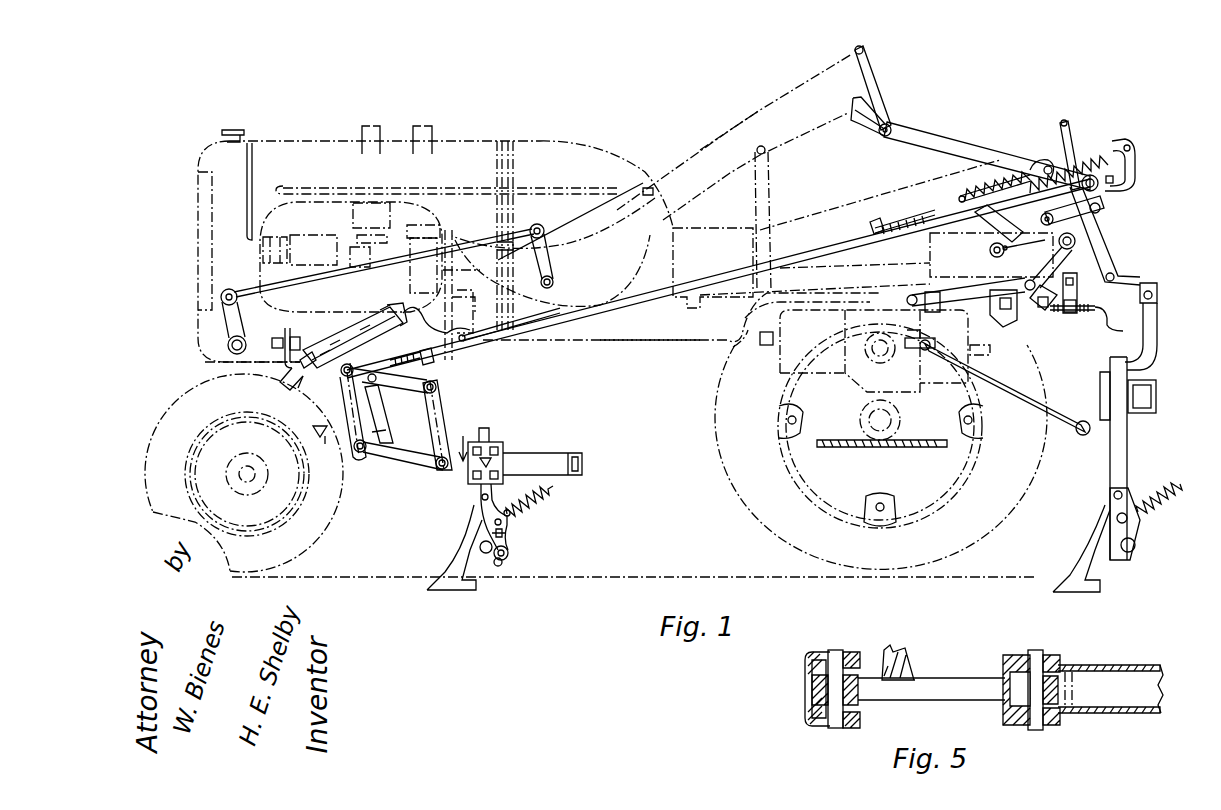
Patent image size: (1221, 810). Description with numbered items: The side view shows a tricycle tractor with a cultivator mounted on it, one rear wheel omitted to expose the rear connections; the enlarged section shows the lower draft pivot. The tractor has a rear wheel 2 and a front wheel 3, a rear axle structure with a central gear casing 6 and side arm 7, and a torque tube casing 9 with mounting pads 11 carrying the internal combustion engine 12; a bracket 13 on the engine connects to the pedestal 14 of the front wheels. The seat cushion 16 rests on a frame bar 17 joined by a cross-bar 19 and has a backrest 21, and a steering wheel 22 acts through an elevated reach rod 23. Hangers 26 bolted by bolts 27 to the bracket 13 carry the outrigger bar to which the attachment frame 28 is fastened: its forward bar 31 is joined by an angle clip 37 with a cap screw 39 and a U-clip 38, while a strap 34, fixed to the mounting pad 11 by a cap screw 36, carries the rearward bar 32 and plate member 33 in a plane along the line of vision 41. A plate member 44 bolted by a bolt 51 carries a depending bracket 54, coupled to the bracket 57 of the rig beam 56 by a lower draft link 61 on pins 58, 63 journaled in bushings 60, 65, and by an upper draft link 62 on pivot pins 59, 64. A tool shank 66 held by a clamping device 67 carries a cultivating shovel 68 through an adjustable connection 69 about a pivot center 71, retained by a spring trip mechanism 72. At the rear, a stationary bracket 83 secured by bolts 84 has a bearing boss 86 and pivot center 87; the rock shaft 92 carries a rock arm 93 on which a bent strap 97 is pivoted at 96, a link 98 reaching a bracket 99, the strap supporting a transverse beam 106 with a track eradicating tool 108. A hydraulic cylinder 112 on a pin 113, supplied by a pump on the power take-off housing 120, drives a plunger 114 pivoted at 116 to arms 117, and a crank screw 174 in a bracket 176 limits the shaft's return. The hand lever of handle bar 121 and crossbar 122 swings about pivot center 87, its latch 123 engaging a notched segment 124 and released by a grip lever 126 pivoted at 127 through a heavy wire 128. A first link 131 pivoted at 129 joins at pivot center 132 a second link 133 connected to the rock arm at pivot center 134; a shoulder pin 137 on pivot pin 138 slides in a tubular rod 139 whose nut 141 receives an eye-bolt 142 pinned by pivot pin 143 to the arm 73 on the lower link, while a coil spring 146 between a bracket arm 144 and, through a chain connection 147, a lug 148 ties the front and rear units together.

In FIG. 1, the rear wheel 2 is at (748, 524).
In FIG. 1, the front wheel 3 is at (183, 410).
In FIG. 1, the central gear casing 6 is at (775, 372).
In FIG. 1, the side arm 7 is at (827, 448).
In FIG. 1, the torque tube casing 9 is at (695, 342).
In FIG. 1, the mounting pad 11 is at (472, 300).
In FIG. 1, the internal combustion engine 12 is at (338, 228).
In FIG. 1, the bracket 13 is at (276, 336).
In FIG. 1, the pedestal 14 is at (215, 372).
In FIG. 1, the seat cushion 16 is at (930, 247).
In FIG. 1, the frame bar 17 is at (838, 310).
In FIG. 1, the cross-bar 19 is at (763, 255).
In FIG. 1, the backrest 21 is at (1067, 120).
In FIG. 1, the steering wheel 22 is at (878, 85).
In FIG. 1, the reach rod 23 is at (490, 245).
In FIG. 1, the hanger 26 is at (291, 332).
In FIG. 1, the bolt 27 is at (264, 345).
In FIG. 1, the attachment frame 28 is at (342, 328).
In FIG. 1, the forward bar 31 is at (318, 355).
In FIG. 1, the rearward bar 32 is at (395, 308).
In FIG. 1, the plate member 33 is at (372, 322).
In FIG. 1, the strap 34 is at (436, 320).
In FIG. 1, the cap screw 36 is at (470, 334).
In FIG. 1, the angle clip 37 is at (284, 384).
In FIG. 1, the U-clip 38 is at (312, 392).
In FIG. 1, the cap screw 39 is at (305, 352).
In FIG. 1, the line of vision 41 is at (815, 95).
In FIG. 1, the plate member 44 is at (330, 340).
In FIG. 1, the bolt 51 is at (388, 308).
In FIG. 1, the bracket 54 is at (344, 410).
In FIG. 5, the bracket 54 is at (808, 686).
In FIG. 1, the rig beam 56 is at (556, 456).
In FIG. 5, the rig beam 56 is at (1122, 666).
In FIG. 1, the bracket 57 is at (442, 422).
In FIG. 5, the bracket 57 is at (1008, 658).
In FIG. 1, the pin 58 is at (362, 454).
In FIG. 5, the pin 58 is at (833, 650).
In FIG. 1, the pivot pin 59 is at (341, 378).
In FIG. 5, the bushing 60 is at (860, 652).
In FIG. 1, the lower draft link 61 is at (404, 462).
In FIG. 5, the lower draft link 61 is at (948, 698).
In FIG. 1, the upper draft link 62 is at (389, 393).
In FIG. 1, the pin 63 is at (442, 472).
In FIG. 5, the pin 63 is at (1034, 650).
In FIG. 1, the pivot pin 64 is at (438, 390).
In FIG. 5, the bushing 65 is at (1060, 655).
In FIG. 1, the tool shank 66 is at (490, 430).
In FIG. 1, the clamping device 67 is at (503, 448).
In FIG. 1, the cultivating shovel 68 is at (458, 591).
In FIG. 1, the adjustable connection 69 is at (510, 555).
In FIG. 1, the pivot center 71 is at (480, 547).
In FIG. 1, the spring trip mechanism 72 is at (510, 522).
In FIG. 1, the arm 73 is at (390, 431).
In FIG. 5, the arm 73 is at (912, 662).
In FIG. 1, the stationary bracket 83 is at (1043, 310).
In FIG. 1, the bolt 84 is at (1060, 310).
In FIG. 1, the bearing boss 86 is at (1077, 240).
In FIG. 1, the pivot center 87 is at (1041, 155).
In FIG. 1, the rock shaft 92 is at (1075, 244).
In FIG. 1, the rock arm 93 is at (1160, 293).
In FIG. 1, the pivot 96 is at (1155, 334).
In FIG. 1, the bent strap 97 is at (1160, 340).
In FIG. 1, the link 98 is at (1023, 395).
In FIG. 1, the bracket 99 is at (930, 340).
In FIG. 1, the transverse beam 106 is at (1157, 396).
In FIG. 1, the track eradicating tool 108 is at (1070, 575).
In FIG. 1, the hydraulic cylinder 112 is at (960, 287).
In FIG. 1, the pin 113 is at (905, 298).
In FIG. 1, the plunger 114 is at (997, 322).
In FIG. 1, the pivotal connection 116 is at (1027, 280).
In FIG. 1, the arm 117 is at (1081, 292).
In FIG. 1, the power take-off housing 120 is at (940, 383).
In FIG. 1, the handle bar 121 is at (854, 112).
In FIG. 1, the crossbar 122 is at (1030, 158).
In FIG. 1, the latch 123 is at (992, 252).
In FIG. 1, the notched segment 124 is at (983, 233).
In FIG. 1, the grip lever 126 is at (878, 138).
In FIG. 1, the pivot 127 is at (893, 128).
In FIG. 1, the heavy wire 128 is at (933, 176).
In FIG. 1, the pivot center 129 is at (1031, 177).
In FIG. 1, the first link 131 is at (1102, 214).
In FIG. 1, the pivot center 132 is at (1102, 208).
In FIG. 1, the second link 133 is at (1120, 266).
In FIG. 1, the pivot center 134 is at (1088, 301).
In FIG. 1, the shoulder pin 137 is at (1069, 164).
In FIG. 1, the pivot pin 138 is at (1124, 145).
In FIG. 1, the tubular rod 139 is at (725, 272).
In FIG. 1, the nut 141 is at (430, 363).
In FIG. 1, the eye-bolt 142 is at (400, 352).
In FIG. 1, the pivot pin 143 is at (391, 389).
In FIG. 1, the bracket arm 144 is at (1136, 168).
In FIG. 1, the coil spring 146 is at (988, 182).
In FIG. 1, the chain connection 147 is at (912, 218).
In FIG. 1, the lug 148 is at (874, 224).
In FIG. 1, the crank screw 174 is at (1118, 332).
In FIG. 1, the bracket 176 is at (1084, 297).